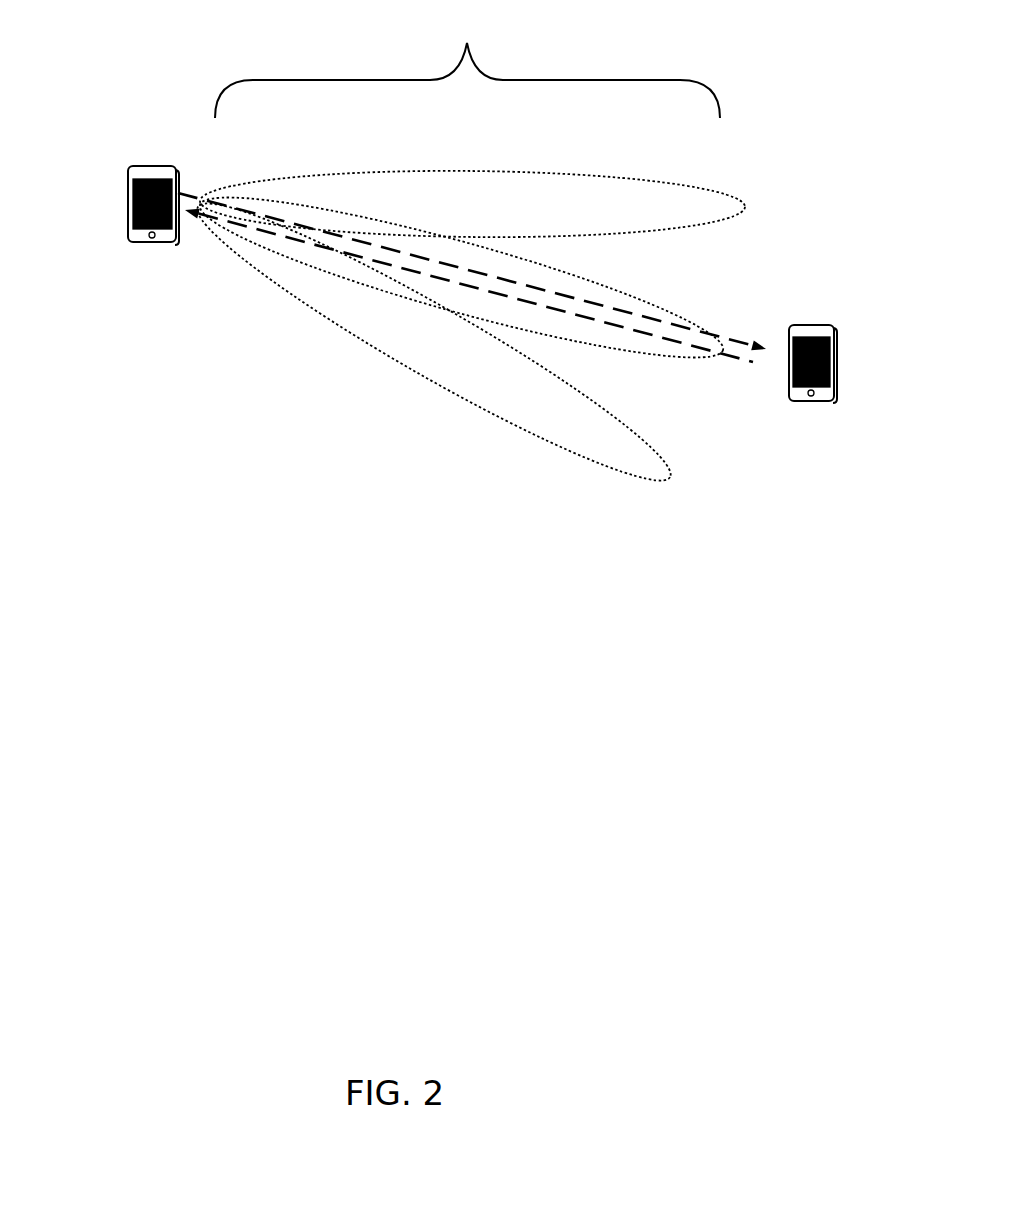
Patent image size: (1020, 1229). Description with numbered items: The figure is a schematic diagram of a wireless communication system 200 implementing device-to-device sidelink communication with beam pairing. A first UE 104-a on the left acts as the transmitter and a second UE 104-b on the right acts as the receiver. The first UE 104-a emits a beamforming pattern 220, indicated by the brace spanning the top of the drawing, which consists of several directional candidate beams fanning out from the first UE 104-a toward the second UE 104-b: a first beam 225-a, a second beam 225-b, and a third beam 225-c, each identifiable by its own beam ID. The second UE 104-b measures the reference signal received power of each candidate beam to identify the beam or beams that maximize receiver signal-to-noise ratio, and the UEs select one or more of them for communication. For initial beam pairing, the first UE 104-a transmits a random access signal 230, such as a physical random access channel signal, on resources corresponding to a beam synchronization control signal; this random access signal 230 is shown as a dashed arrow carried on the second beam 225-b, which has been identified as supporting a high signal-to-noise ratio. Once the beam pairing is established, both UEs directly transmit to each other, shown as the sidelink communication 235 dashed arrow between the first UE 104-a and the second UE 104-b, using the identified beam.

The wireless communication system 200 is at (733, 1057).
The first UE 104-a is at (128, 217).
The second UE 104-b is at (798, 403).
The beamforming pattern 220 is at (447, 32).
The first beam 225-a is at (700, 222).
The second beam 225-b is at (677, 360).
The third beam 225-c is at (527, 443).
The random access signal 230 is at (738, 342).
The direct transmission 235 is at (383, 263).